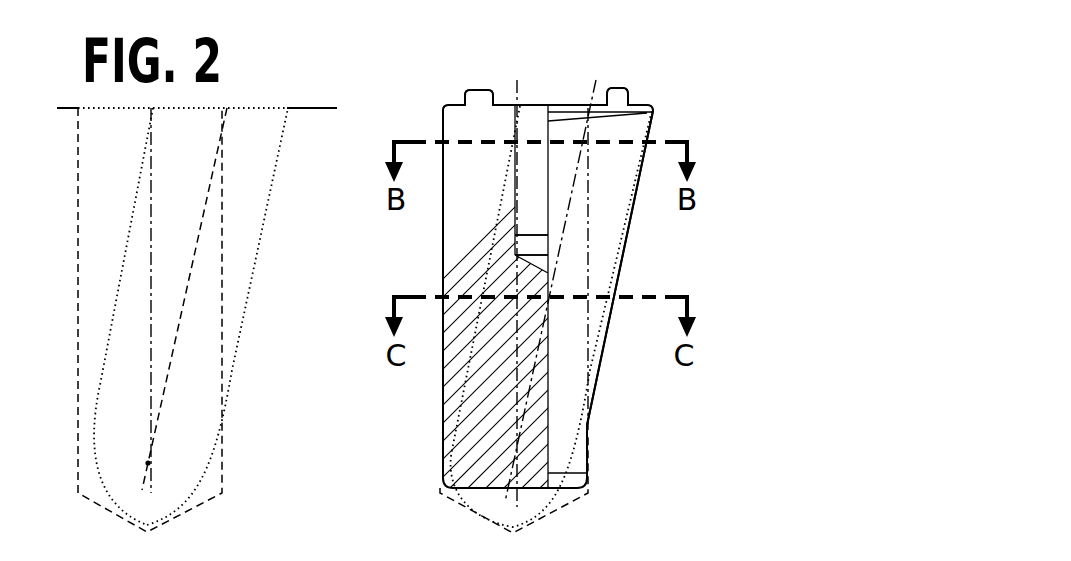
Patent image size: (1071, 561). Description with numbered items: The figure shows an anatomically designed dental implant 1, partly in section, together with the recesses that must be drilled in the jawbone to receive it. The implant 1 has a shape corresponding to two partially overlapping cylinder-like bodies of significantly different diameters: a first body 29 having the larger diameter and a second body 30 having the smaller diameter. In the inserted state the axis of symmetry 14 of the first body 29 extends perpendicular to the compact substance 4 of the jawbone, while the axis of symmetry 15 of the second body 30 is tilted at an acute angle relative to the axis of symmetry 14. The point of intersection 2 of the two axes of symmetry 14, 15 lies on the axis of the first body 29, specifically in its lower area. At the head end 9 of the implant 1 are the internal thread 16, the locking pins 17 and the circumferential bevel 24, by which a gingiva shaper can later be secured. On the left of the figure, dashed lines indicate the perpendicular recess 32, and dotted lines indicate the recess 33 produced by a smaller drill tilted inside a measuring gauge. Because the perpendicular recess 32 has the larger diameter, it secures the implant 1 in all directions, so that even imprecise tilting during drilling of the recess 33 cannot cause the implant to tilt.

The implant 1 is at (663, 251).
The point of intersection 2 is at (148, 463).
The compact substance 4 is at (310, 108).
The head end 9 is at (557, 104).
The axis of symmetry 14 is at (517, 83).
The axis of symmetry 15 is at (596, 82).
The thread 16 is at (512, 213).
The locking pins 17 is at (618, 92).
The circumferential bevel 24 is at (650, 107).
The first body 29 is at (508, 210).
The second body 30 is at (602, 360).
The perpendicular recess 32 is at (220, 497).
The recess 33 is at (712, 527).